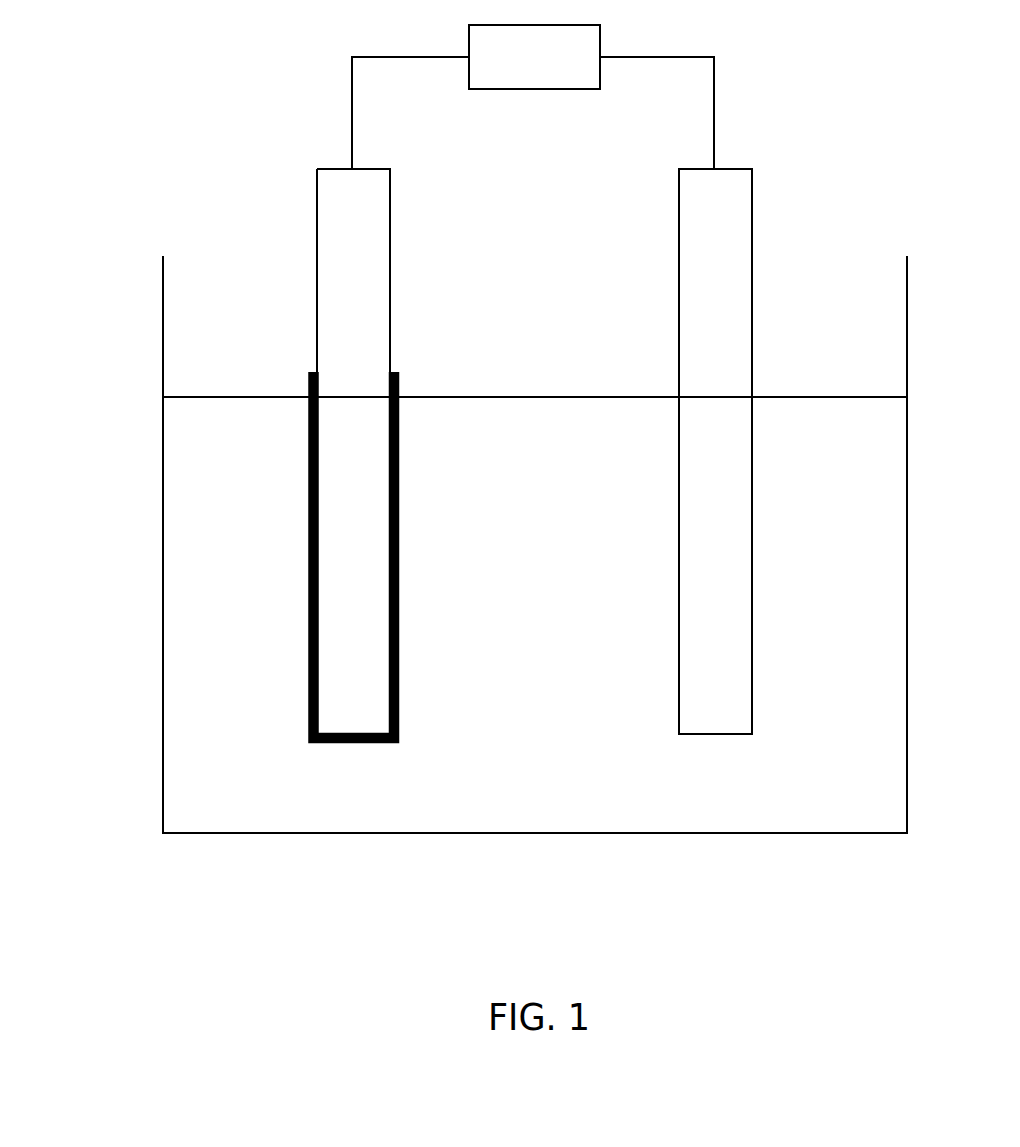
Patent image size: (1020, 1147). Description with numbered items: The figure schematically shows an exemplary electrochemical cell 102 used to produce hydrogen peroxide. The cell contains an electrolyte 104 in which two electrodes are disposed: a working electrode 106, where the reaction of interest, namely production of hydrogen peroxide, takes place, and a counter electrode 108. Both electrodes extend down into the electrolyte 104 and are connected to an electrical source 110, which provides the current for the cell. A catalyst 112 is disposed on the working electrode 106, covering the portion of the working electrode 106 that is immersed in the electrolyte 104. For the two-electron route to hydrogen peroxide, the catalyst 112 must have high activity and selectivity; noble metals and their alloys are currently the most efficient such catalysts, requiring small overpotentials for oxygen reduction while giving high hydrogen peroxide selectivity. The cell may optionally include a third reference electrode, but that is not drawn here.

The electrochemical cell 102 is at (163, 550).
The electrolyte 104 is at (562, 563).
The working electrode 106 is at (361, 710).
The counter electrode 108 is at (719, 703).
The electrical source 110 is at (508, 72).
The catalyst 112 is at (398, 716).